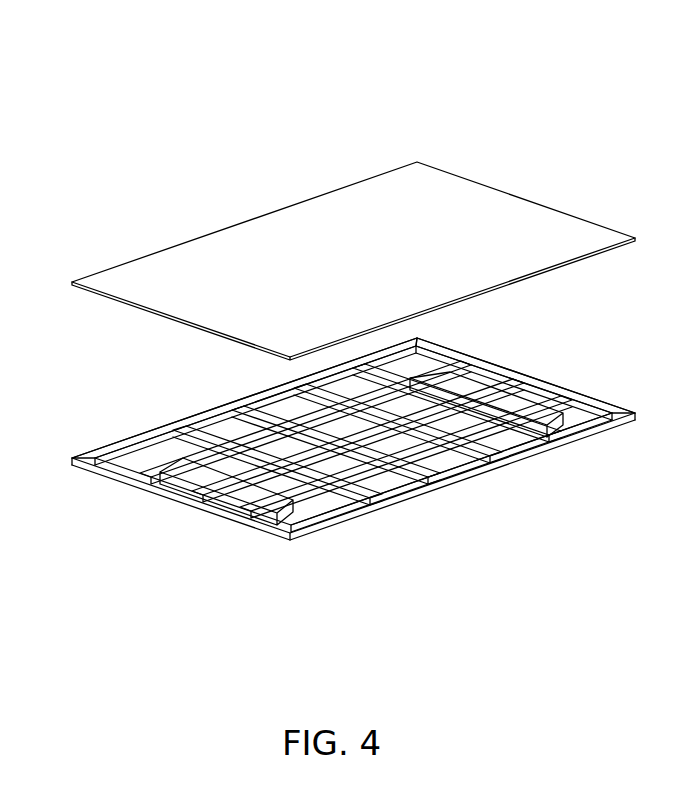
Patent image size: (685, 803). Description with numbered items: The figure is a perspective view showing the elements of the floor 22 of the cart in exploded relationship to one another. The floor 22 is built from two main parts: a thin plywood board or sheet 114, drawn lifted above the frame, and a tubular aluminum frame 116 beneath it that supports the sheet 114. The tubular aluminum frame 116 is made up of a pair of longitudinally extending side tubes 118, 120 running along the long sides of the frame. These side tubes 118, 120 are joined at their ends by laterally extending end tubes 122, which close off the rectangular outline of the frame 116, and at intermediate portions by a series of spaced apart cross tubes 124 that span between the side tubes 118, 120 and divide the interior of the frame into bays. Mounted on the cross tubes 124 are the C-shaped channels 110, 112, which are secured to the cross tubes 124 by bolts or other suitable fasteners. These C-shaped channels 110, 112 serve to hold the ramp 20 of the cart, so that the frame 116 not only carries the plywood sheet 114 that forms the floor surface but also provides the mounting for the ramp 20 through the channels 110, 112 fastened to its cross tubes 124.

The ramp 20 is at (280, 458).
The floor 22 is at (610, 194).
The C-shaped channel 110 is at (308, 513).
The C-shaped channel 112 is at (177, 463).
The sheet 114 is at (297, 243).
The tubular aluminum frame 116 is at (550, 468).
The side tube 118 is at (230, 407).
The side tube 120 is at (183, 503).
The end tube 122 is at (492, 365).
The cross tube 124 is at (350, 467).